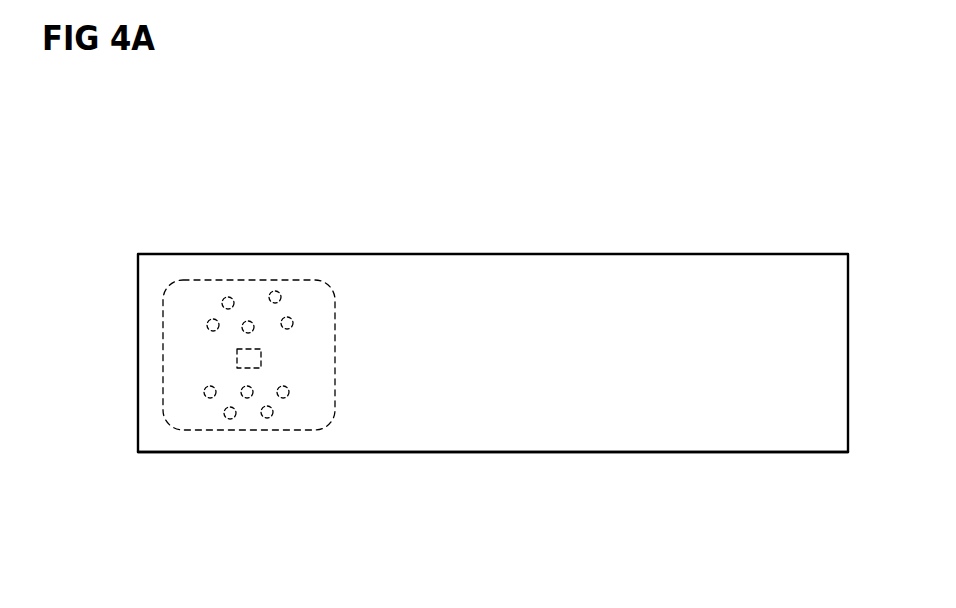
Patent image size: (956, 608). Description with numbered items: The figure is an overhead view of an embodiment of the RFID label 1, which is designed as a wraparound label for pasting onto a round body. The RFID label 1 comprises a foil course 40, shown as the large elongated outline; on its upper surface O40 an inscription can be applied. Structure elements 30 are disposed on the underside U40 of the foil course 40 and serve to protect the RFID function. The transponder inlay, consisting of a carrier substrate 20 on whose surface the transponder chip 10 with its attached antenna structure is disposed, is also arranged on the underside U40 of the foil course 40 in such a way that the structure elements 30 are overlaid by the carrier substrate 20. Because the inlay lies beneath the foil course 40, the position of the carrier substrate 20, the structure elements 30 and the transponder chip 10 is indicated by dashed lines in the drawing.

The RFID label 1 is at (683, 108).
The transponder chip 10 is at (237, 353).
The carrier substrate 20 is at (183, 290).
The structure elements 30 is at (283, 290).
The foil course 40 is at (640, 255).
The underside of the foil course U40 is at (250, 453).
The surface of the foil course O40 is at (453, 430).